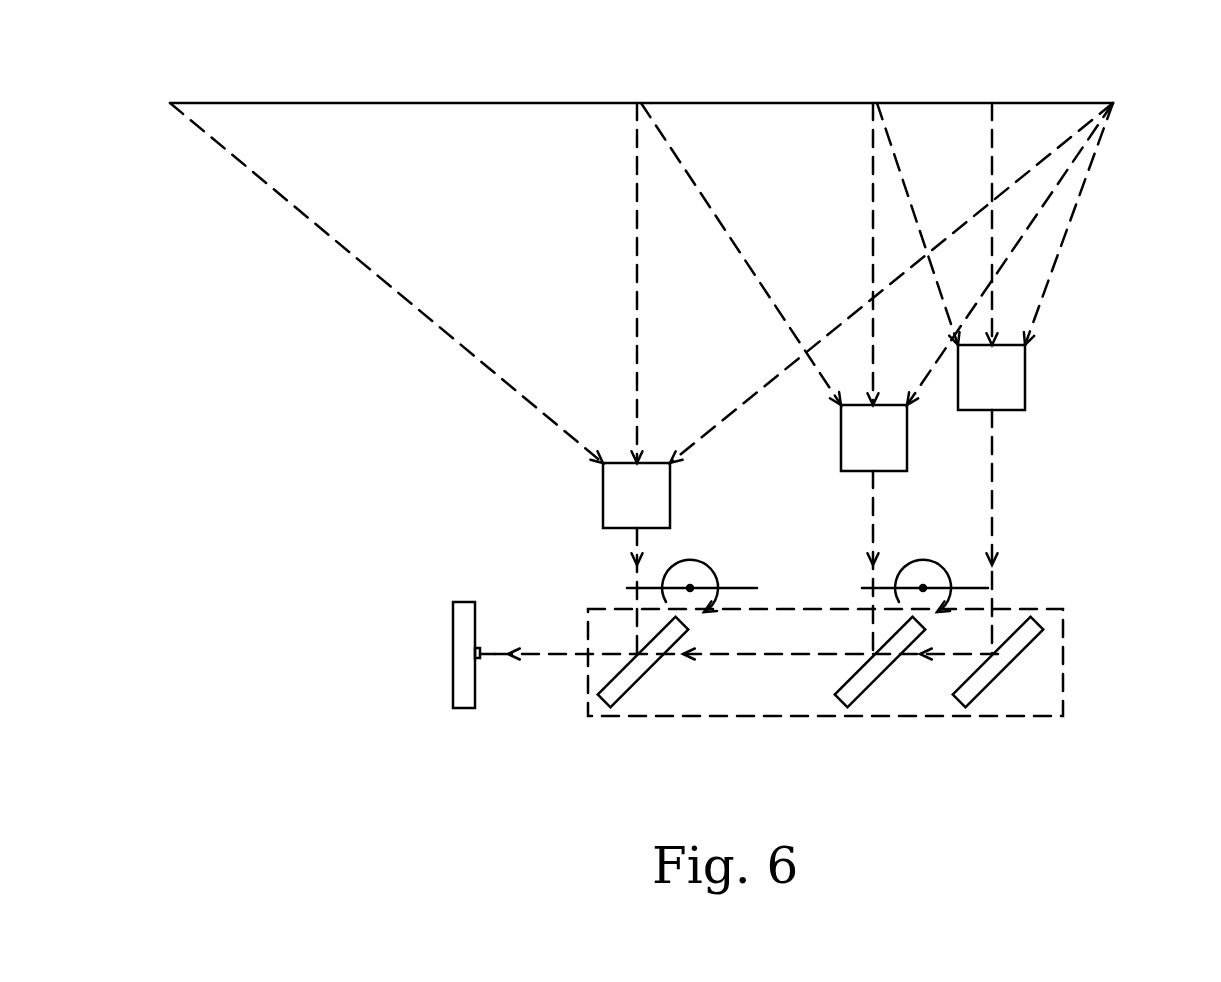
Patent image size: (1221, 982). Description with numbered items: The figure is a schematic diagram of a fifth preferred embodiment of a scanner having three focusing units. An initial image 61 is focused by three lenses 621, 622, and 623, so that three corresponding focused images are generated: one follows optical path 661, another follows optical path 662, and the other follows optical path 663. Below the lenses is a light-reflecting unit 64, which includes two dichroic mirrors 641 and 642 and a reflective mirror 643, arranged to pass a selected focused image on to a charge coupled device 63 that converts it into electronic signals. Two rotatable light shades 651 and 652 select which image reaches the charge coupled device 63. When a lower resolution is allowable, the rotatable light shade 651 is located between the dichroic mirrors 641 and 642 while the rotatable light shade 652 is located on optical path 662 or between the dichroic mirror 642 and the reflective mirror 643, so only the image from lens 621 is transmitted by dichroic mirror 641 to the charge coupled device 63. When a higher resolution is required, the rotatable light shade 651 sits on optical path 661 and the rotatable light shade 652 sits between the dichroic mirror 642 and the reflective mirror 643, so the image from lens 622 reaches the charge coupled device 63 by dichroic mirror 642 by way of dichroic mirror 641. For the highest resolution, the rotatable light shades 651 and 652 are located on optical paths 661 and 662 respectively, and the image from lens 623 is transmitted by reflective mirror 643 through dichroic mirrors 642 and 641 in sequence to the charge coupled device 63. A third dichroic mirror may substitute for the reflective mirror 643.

The initial image 61 is at (760, 103).
The lens 621 is at (613, 502).
The lens 622 is at (850, 442).
The lens 623 is at (1017, 390).
The charge coupled device 63 is at (463, 653).
The light-reflecting unit 64 is at (1048, 668).
The dichroic mirror 641 is at (642, 662).
The dichroic mirror 642 is at (878, 662).
The reflective mirror 643 is at (997, 662).
The rotatable light shade 651 is at (733, 588).
The rotatable light shade 652 is at (977, 588).
The optical path 661 is at (634, 577).
The optical path 662 is at (872, 575).
The optical path 663 is at (992, 575).